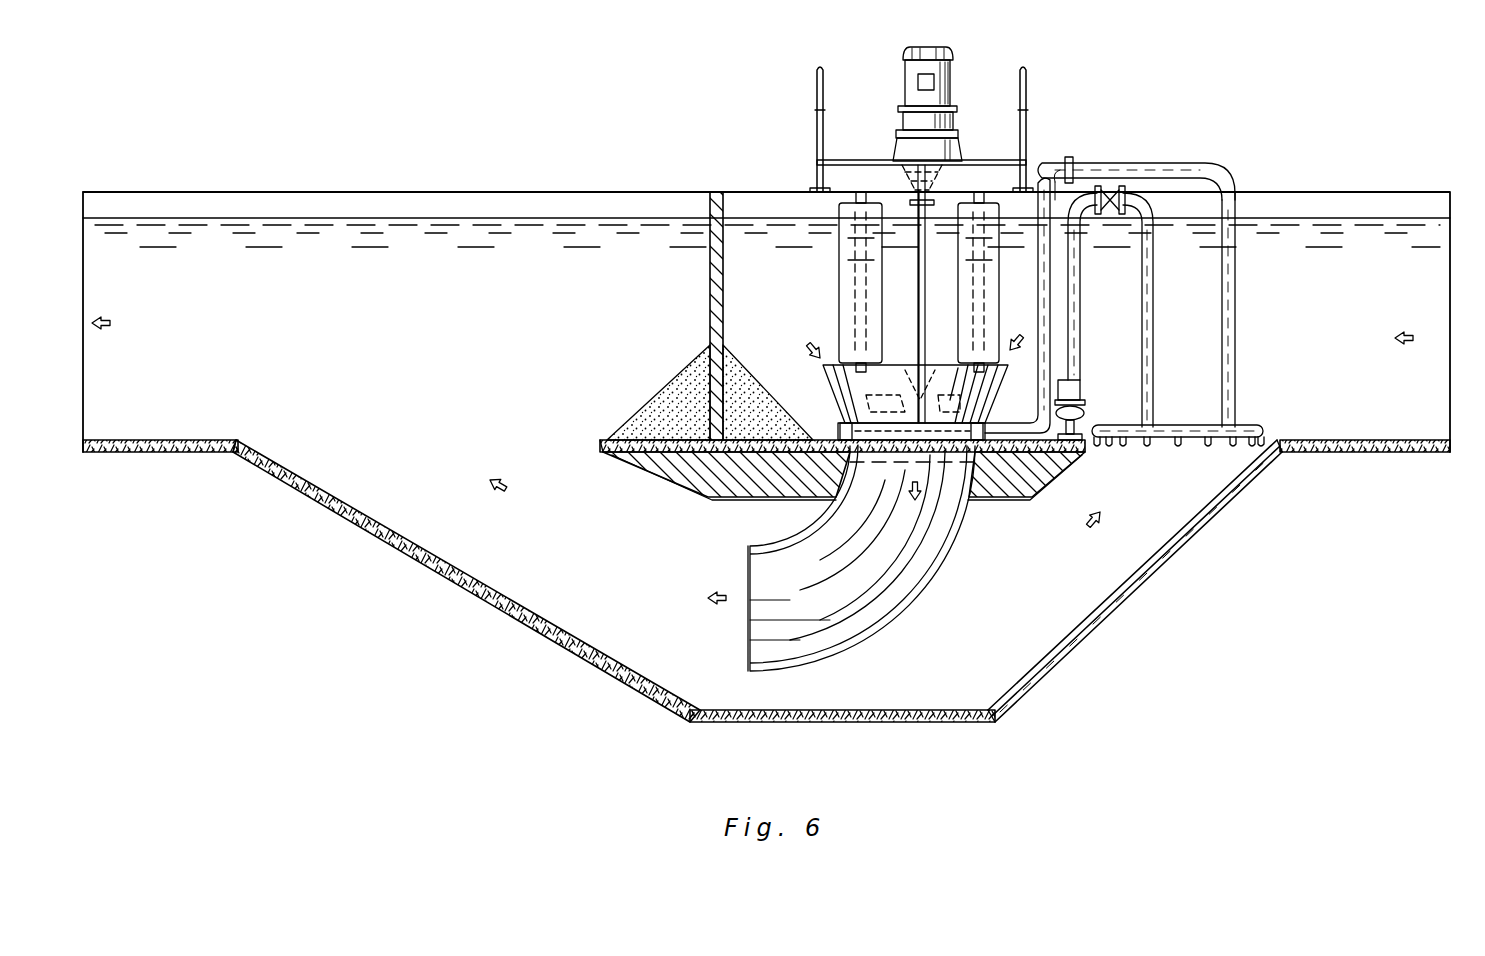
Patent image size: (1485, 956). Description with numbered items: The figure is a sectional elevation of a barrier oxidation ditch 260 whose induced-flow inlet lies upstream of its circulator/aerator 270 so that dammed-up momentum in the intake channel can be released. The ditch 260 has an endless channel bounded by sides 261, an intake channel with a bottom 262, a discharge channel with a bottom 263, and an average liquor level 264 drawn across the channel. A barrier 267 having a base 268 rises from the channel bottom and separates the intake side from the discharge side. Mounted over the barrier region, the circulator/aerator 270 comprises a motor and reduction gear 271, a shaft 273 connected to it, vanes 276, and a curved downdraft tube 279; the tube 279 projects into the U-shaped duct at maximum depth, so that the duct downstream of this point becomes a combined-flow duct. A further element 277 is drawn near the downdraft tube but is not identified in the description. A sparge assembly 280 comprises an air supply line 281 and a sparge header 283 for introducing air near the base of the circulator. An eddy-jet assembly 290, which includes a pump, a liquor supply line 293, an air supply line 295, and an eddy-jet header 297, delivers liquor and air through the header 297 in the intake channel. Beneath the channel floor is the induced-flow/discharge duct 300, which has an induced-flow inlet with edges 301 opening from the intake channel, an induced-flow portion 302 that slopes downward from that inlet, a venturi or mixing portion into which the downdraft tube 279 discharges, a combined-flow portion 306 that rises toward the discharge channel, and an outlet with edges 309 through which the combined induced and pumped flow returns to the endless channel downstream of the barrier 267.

The barrier oxidation ditch 260 is at (508, 170).
The sides 261 is at (322, 192).
The intake channel bottom 262 is at (1386, 440).
The discharge channel bottom 263 is at (118, 440).
The average liquor level 264 is at (1290, 215).
The barrier 267 is at (710, 202).
The base 268 is at (672, 368).
The circulator/aerator 270 is at (993, 72).
The motor and reduction gear 271 is at (902, 80).
The shaft 273 is at (858, 254).
The vanes 276 is at (997, 246).
The inlet funnel 277 is at (830, 386).
The curved downdraft tube 279 is at (940, 567).
The sparge assembly 280 is at (1048, 141).
The air supply line 281 is at (1036, 332).
The sparge header 283 is at (838, 430).
The eddy-jet assembly 290 is at (1164, 160).
The liquor supply line 293 is at (1155, 298).
The air supply line 295 is at (1235, 298).
The eddy-jet header 297 is at (1245, 425).
The induced-flow/discharge duct 300 is at (1150, 590).
The induced-flow inlet edges 301 is at (1285, 440).
The induced-flow portion 302 is at (1215, 508).
The combined-flow portion 306 is at (565, 643).
The outlet edges 309 is at (252, 444).